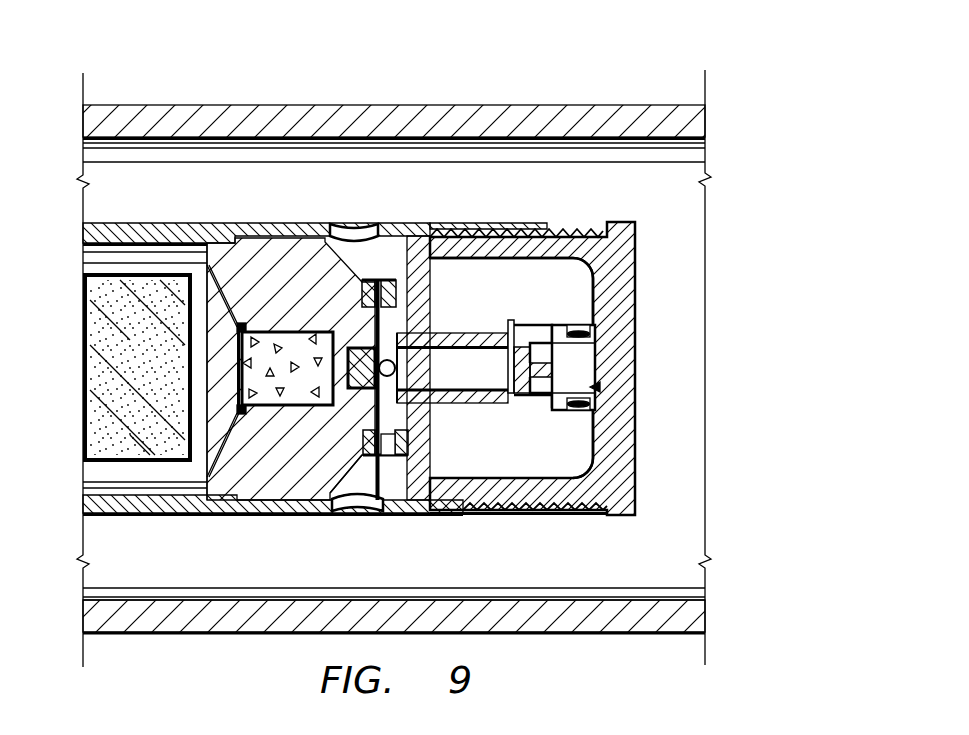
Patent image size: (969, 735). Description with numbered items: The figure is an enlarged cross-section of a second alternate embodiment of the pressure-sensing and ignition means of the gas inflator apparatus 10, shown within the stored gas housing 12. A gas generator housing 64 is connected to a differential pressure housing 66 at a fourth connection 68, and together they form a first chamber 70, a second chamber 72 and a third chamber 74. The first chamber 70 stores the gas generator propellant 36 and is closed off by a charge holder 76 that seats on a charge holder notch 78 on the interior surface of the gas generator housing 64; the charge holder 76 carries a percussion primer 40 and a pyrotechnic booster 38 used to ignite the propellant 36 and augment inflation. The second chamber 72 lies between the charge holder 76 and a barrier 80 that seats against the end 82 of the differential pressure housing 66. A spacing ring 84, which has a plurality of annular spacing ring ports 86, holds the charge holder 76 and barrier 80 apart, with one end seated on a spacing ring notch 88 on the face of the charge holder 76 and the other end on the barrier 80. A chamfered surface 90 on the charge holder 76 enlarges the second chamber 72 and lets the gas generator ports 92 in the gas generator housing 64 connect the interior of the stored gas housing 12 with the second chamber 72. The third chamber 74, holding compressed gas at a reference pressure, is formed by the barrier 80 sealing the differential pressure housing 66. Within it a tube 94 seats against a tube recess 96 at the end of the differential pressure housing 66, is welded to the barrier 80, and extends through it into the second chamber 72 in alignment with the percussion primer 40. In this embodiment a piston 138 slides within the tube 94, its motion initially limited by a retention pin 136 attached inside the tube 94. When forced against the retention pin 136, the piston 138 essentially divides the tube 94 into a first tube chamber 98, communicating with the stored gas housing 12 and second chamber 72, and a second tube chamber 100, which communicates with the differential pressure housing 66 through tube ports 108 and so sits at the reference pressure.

The gas inflator apparatus 10 is at (742, 65).
The stored gas housing 12 is at (300, 105).
The gas generator propellant 36 is at (143, 374).
The pyrotechnic booster 38 is at (297, 407).
The percussion primer 40 is at (347, 347).
The gas generator housing 64 is at (148, 222).
The differential pressure housing 66 is at (636, 262).
The fourth connection 68 is at (525, 228).
The first chamber 70 is at (97, 472).
The second chamber 72 is at (393, 272).
The third chamber 74 is at (496, 296).
The charge holder 76 is at (262, 250).
The charge holder notch 78 is at (232, 516).
The barrier 80 is at (412, 516).
The end 82 is at (450, 515).
The spacing ring 84 is at (422, 455).
The spacing ring ports 86 is at (420, 312).
The spacing ring notch 88 is at (352, 452).
The chamfered surface 90 is at (356, 500).
The gas generator ports 92 is at (362, 226).
The tube 94 is at (503, 405).
The tube recess 96 is at (598, 330).
The first tube chamber 98 is at (443, 382).
The second tube chamber 100 is at (600, 387).
The tube ports 108 is at (562, 415).
The retention pin 136 is at (511, 320).
The piston 138 is at (512, 374).